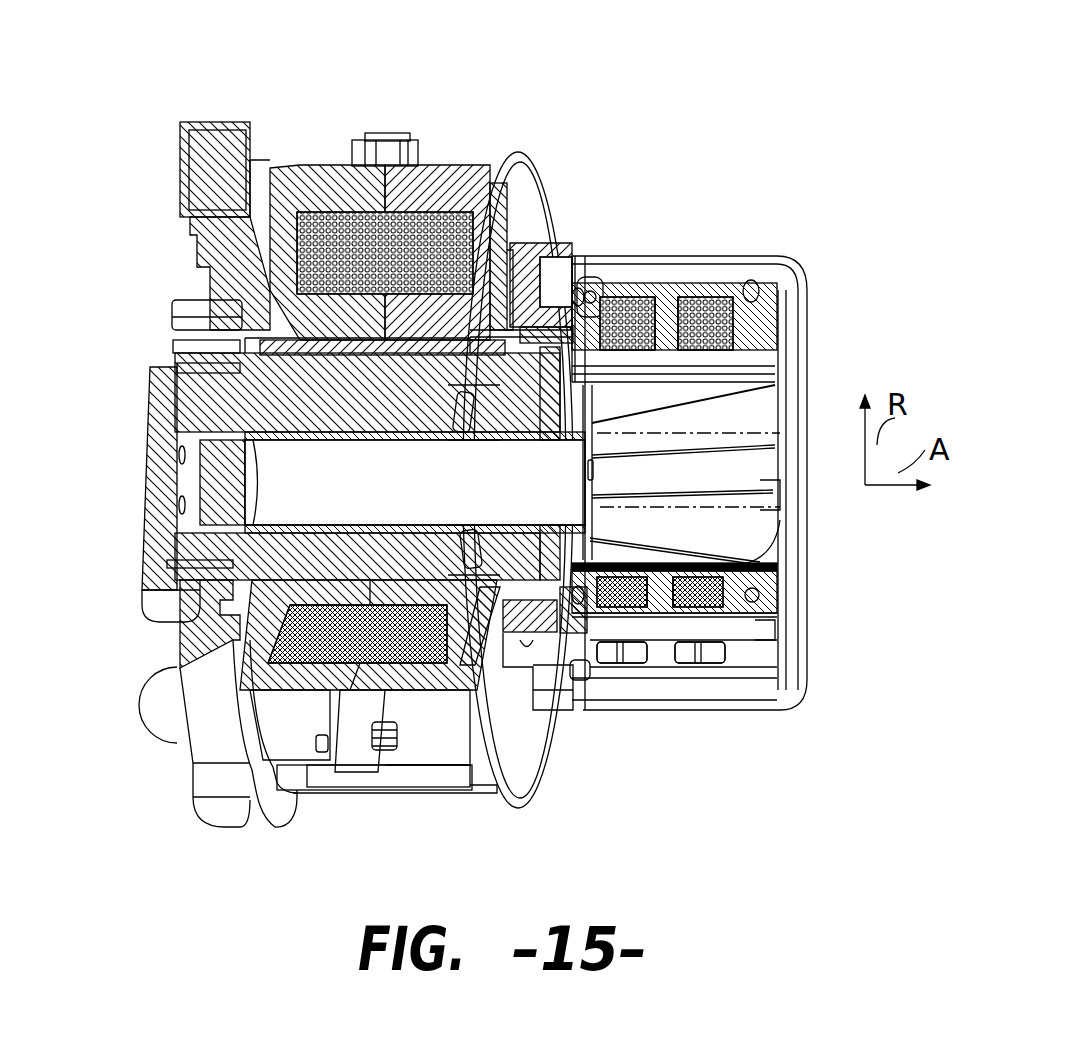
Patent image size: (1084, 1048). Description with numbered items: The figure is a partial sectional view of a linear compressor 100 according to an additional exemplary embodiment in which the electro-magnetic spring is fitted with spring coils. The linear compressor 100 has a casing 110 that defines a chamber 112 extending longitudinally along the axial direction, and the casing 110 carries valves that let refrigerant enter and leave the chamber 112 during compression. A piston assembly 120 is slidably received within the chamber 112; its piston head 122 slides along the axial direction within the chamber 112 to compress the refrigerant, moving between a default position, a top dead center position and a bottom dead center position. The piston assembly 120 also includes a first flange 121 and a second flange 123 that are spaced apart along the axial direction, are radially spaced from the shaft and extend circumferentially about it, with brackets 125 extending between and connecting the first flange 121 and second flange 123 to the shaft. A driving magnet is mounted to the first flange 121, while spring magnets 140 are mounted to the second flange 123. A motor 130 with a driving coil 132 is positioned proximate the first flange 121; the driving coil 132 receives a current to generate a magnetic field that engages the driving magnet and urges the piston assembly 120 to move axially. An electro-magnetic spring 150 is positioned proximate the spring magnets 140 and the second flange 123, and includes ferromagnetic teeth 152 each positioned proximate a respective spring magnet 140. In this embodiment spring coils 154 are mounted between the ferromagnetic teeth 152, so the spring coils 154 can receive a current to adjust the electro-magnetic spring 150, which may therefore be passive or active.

The linear compressor 100 is at (277, 76).
The casing 110 is at (190, 407).
The chamber 112 is at (133, 512).
The piston assembly 120 is at (396, 493).
The first flange 121 is at (493, 343).
The piston head 122 is at (162, 455).
The second flange 123 is at (740, 410).
The brackets 125 is at (580, 387).
The motor 130 is at (457, 128).
The driving coil 132 is at (347, 233).
The spring magnet 140 is at (630, 300).
The electro-magnetic spring 150 is at (725, 160).
The ferromagnetic teeth 152 is at (597, 343).
The spring coil 154 is at (760, 628).